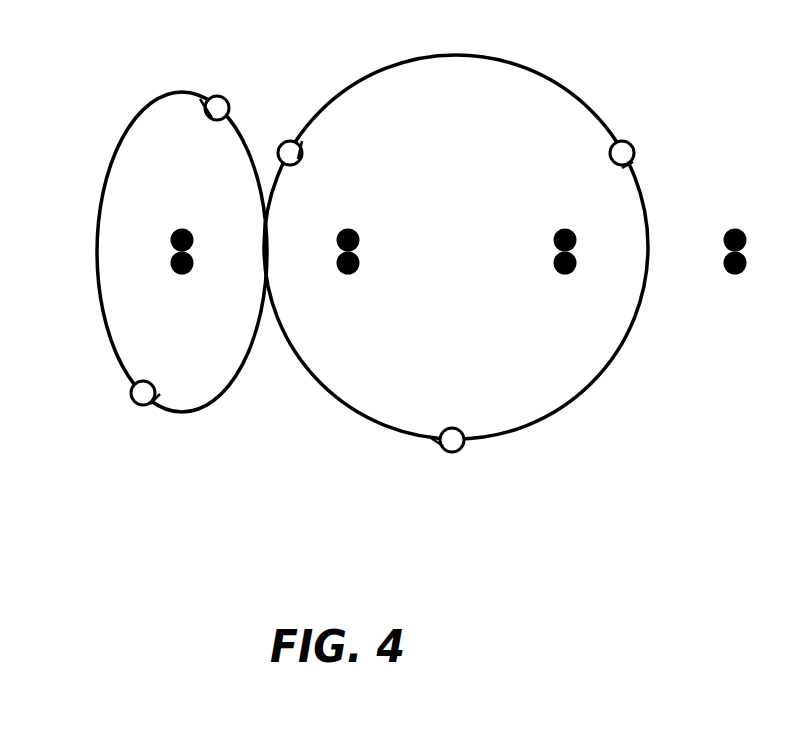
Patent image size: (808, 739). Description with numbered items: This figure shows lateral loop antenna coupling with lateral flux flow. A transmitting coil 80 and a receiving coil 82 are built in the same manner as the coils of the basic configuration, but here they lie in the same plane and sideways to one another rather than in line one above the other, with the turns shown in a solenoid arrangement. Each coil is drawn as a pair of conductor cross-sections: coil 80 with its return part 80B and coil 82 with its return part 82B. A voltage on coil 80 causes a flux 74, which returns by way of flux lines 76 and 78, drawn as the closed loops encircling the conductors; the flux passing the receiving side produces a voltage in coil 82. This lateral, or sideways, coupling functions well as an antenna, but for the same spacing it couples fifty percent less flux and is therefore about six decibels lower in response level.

The flux 74 is at (268, 246).
The flux lines 76 is at (508, 64).
The flux lines 78 is at (122, 138).
The coil 80 is at (174, 266).
The return part of coil 80B is at (356, 260).
The coil 82 is at (558, 262).
The return part of coil 82B is at (743, 262).